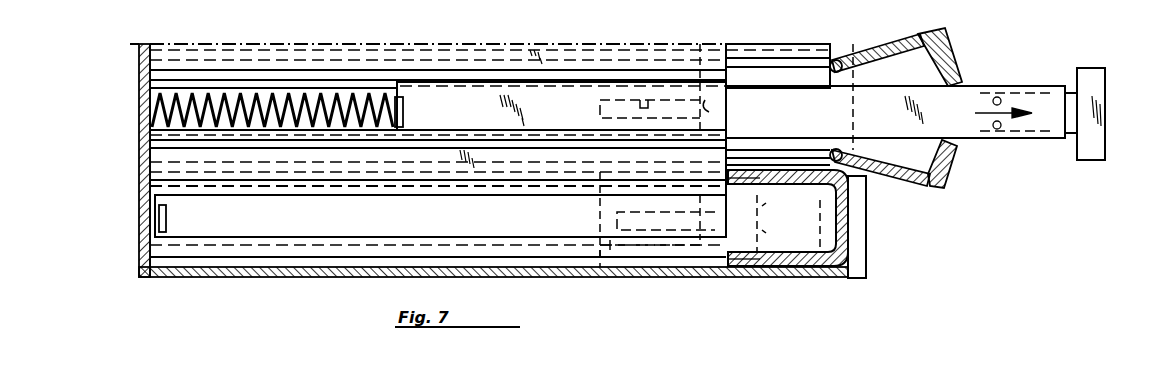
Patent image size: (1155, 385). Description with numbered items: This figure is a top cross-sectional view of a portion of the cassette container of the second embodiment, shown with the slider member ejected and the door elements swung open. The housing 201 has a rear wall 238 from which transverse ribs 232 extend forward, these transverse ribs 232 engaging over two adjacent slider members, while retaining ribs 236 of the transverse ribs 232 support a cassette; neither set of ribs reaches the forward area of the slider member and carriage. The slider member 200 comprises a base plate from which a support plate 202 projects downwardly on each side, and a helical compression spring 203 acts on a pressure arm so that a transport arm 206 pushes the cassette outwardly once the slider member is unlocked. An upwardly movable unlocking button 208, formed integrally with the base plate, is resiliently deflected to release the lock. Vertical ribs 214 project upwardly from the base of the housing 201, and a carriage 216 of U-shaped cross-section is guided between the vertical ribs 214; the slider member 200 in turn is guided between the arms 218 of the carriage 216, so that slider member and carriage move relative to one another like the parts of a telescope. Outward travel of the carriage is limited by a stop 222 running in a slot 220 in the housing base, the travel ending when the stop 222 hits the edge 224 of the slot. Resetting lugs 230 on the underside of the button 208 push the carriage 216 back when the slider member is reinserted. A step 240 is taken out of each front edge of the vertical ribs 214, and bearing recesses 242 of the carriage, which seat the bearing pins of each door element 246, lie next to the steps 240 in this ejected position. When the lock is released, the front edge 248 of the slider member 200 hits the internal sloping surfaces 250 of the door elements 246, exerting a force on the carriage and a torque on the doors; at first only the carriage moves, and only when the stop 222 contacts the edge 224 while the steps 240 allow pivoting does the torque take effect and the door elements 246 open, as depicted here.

The slider member 200 is at (1040, 80).
The housing 201 is at (138, 233).
The support plate 202 is at (995, 86).
The helical compression spring 203 is at (283, 92).
The transport arm 206 is at (403, 108).
The unlocking button 208 is at (1090, 150).
The vertical ribs 214 is at (758, 60).
The carriage 216 is at (872, 76).
The arms of carriage 218 is at (806, 78).
The slot 220 is at (640, 100).
The stop 222 is at (712, 110).
The edge of slot 224 is at (708, 60).
The resetting lugs 230 is at (763, 230).
The transverse ribs 232 is at (333, 198).
The retaining ribs 236 is at (437, 70).
The rear wall 238 is at (148, 200).
The step 240 is at (848, 60).
The bearing recesses 242 is at (748, 266).
The door element 246 is at (948, 36).
The front edge of slider member 248 is at (1082, 104).
The internal sloping surfaces 250 is at (935, 148).